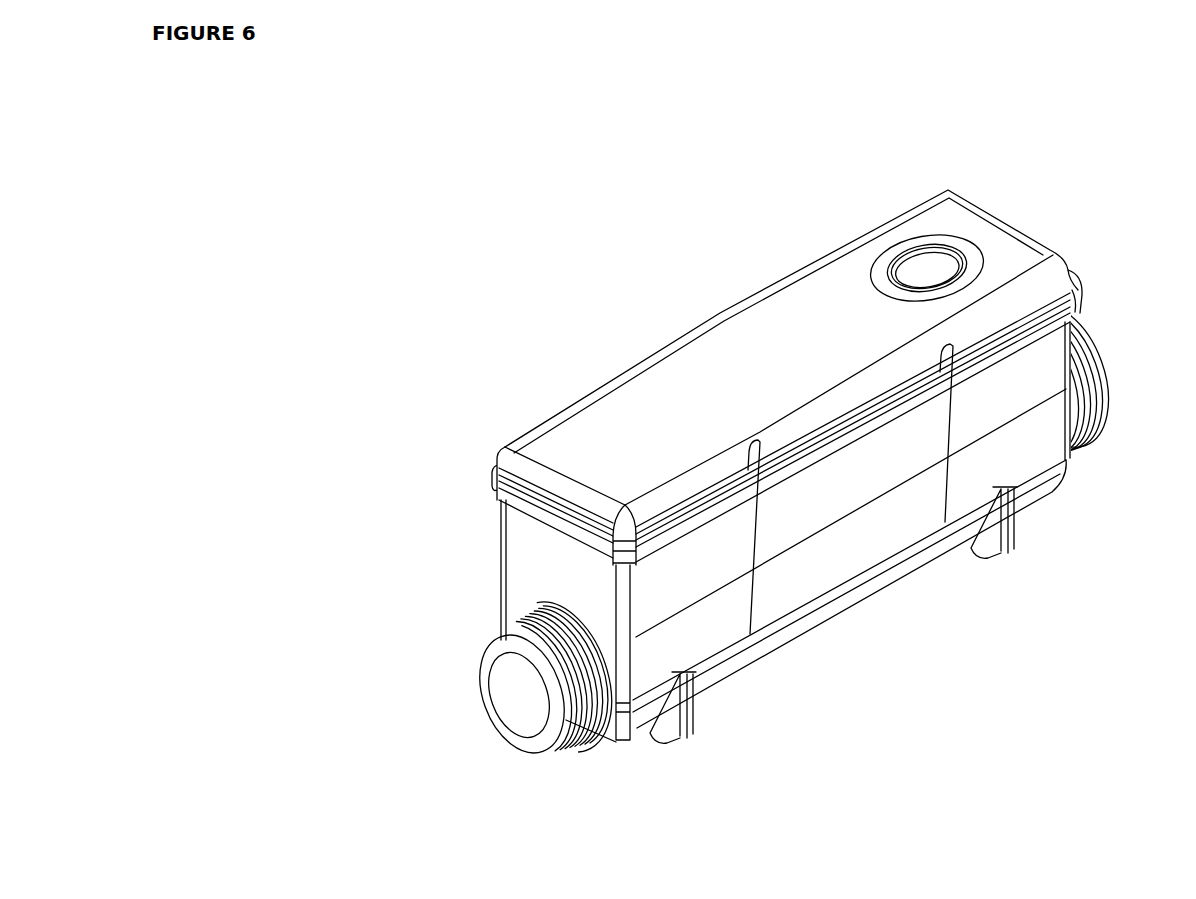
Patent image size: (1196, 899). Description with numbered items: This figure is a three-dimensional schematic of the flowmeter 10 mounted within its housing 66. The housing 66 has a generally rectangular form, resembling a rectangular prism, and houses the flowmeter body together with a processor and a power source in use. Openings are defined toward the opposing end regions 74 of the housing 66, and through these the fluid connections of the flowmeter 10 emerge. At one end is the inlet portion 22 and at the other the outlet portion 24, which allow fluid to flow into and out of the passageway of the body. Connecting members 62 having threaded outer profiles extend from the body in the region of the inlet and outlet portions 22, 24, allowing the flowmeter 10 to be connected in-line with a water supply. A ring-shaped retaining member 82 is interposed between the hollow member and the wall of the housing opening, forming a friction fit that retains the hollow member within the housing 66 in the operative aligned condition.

The flowmeter 10 is at (408, 289).
The inlet portion 22 is at (517, 686).
The outlet portion 24 is at (1114, 402).
The connecting member 62 is at (1097, 379).
The housing 66 is at (511, 534).
The end region 74 is at (1120, 249).
The retaining member 82 is at (610, 723).